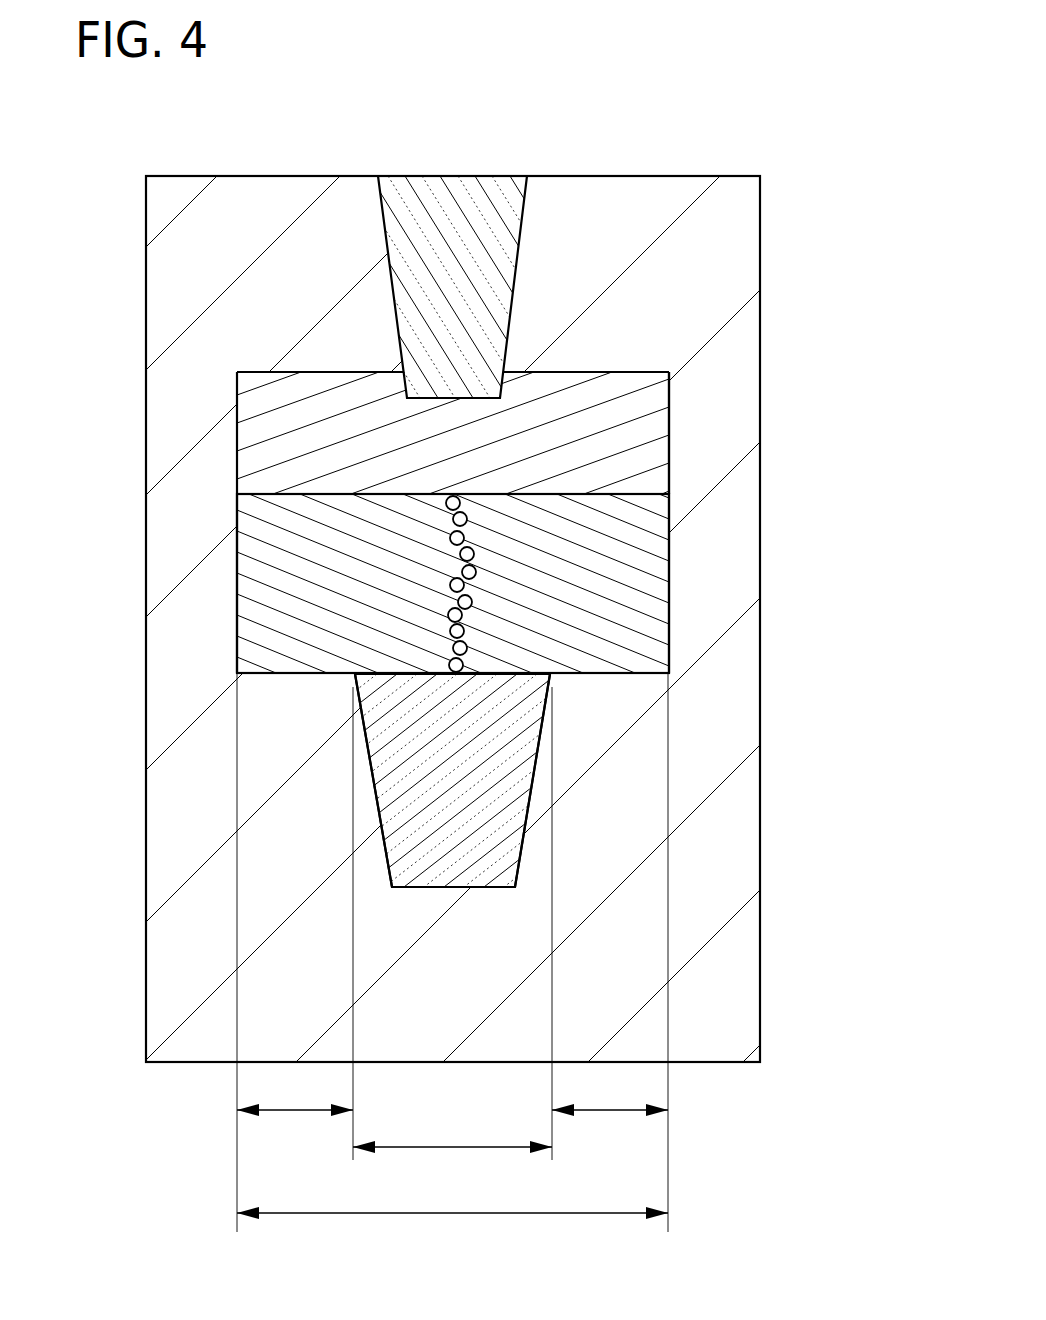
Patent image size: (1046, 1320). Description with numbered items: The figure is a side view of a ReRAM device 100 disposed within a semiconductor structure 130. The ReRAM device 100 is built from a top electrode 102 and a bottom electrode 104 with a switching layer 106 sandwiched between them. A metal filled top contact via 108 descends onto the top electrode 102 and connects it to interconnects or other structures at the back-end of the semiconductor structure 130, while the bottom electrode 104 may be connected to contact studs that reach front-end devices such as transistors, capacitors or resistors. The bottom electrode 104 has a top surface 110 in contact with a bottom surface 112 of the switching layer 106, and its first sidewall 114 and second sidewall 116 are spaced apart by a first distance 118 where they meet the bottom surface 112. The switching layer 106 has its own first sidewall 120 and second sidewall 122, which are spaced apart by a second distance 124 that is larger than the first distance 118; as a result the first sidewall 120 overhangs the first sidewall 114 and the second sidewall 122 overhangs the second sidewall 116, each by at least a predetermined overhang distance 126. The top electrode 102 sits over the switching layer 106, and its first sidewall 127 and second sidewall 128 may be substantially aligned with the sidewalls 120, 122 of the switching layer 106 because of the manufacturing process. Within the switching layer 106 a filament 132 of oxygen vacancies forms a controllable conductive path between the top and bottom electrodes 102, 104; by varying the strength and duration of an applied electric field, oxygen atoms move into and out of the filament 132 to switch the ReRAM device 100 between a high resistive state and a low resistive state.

The ReRAM device 100 is at (497, 100).
The top electrode 102 is at (284, 451).
The bottom electrode 104 is at (478, 797).
The switching layer 106 is at (281, 564).
The metal filled top contact via 108 is at (500, 192).
The top surface 110 is at (487, 676).
The bottom surface 112 is at (530, 673).
The first sidewall 114 is at (390, 868).
The second sidewall 116 is at (528, 813).
The first distance 118 is at (457, 1148).
The first sidewall 120 is at (236, 608).
The second sidewall 122 is at (669, 541).
The second distance 124 is at (438, 1215).
The overhang distance 126 is at (313, 1112).
The first sidewall 127 is at (236, 386).
The second sidewall 128 is at (669, 412).
The semiconductor structure 130 is at (762, 946).
The filament 132 is at (452, 616).